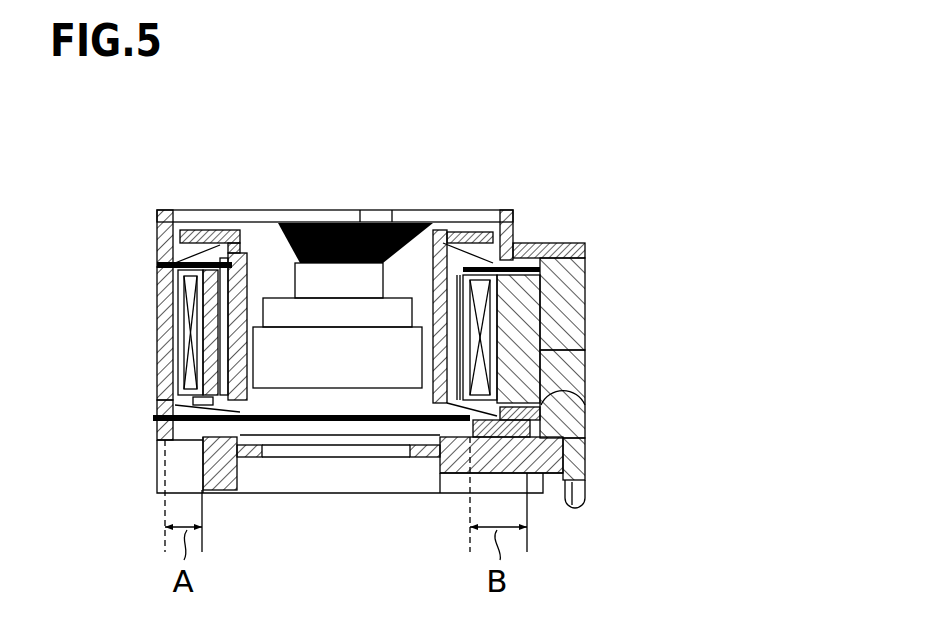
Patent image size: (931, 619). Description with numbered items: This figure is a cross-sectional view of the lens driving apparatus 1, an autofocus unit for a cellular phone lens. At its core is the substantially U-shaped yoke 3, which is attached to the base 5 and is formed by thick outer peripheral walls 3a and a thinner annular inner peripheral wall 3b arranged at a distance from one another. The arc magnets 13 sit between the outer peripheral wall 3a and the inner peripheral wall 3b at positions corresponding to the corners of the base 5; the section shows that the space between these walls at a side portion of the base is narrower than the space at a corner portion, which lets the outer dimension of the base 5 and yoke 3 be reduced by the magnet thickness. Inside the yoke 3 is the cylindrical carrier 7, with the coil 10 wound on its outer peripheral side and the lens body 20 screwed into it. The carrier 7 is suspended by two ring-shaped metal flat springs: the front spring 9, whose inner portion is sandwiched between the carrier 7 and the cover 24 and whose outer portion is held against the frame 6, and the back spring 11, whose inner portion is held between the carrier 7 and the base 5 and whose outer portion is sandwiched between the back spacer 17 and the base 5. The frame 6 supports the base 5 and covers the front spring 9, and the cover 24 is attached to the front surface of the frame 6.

The lens driving apparatus 1 is at (565, 140).
The yoke 3 is at (153, 300).
The outer peripheral wall 3a is at (563, 372).
The inner peripheral wall 3b is at (547, 333).
The base 5 is at (583, 412).
The frame 6 is at (165, 210).
The carrier 7 is at (242, 410).
The front spring 9 is at (473, 208).
The coil 10 is at (153, 365).
The back spring 11 is at (200, 405).
The magnet 13 is at (583, 260).
The back spacer 17 is at (582, 448).
The lens body 20 is at (292, 288).
The cover 24 is at (208, 232).